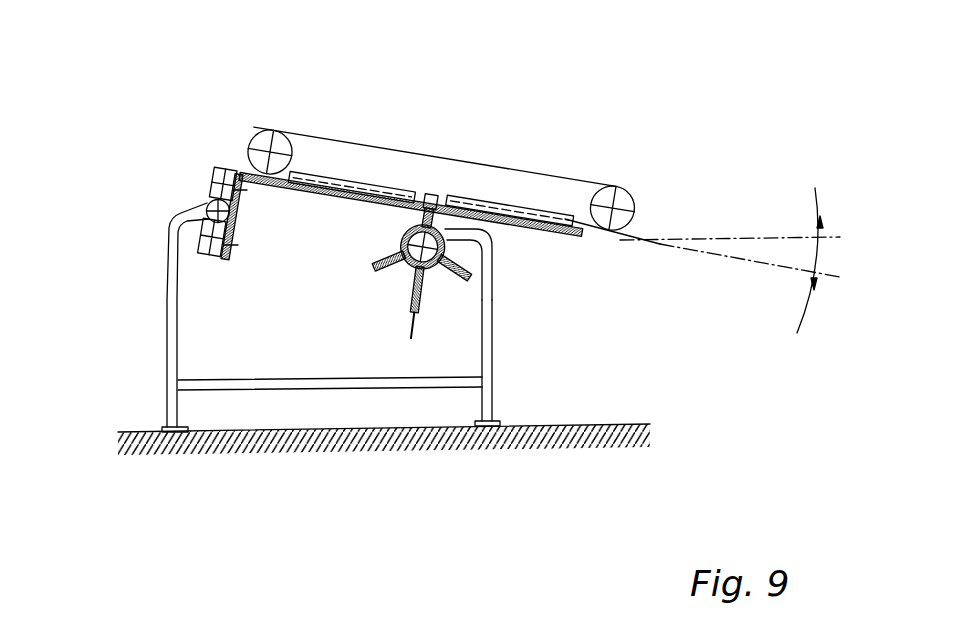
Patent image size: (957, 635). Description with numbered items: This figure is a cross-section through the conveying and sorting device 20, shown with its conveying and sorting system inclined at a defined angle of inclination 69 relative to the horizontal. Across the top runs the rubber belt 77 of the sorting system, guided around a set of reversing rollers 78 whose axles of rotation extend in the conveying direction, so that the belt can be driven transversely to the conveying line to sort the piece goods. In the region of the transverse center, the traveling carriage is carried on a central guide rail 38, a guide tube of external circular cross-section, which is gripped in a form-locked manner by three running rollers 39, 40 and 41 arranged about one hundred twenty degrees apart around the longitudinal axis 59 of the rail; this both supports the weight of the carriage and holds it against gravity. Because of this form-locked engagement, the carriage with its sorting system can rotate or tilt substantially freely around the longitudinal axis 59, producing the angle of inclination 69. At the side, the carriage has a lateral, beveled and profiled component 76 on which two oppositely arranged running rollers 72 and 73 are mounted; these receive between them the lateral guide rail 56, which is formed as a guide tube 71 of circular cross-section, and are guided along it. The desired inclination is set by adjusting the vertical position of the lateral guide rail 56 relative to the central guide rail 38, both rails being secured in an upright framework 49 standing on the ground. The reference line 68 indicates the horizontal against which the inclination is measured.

The device 20 is at (449, 166).
The central guide rail 38 is at (493, 244).
The running roller 39 is at (478, 167).
The running roller 40 is at (375, 268).
The running roller 41 is at (462, 282).
The upright framework 49 is at (172, 330).
The lateral guide rail 56 is at (181, 209).
The longitudinal axis 59 is at (407, 278).
The reference axis 68 is at (717, 239).
The angle of inclination 69 is at (820, 258).
The guide tube 71 is at (206, 203).
The running roller 72 is at (214, 168).
The running roller 73 is at (210, 256).
The lateral profiled component 76 is at (243, 213).
The rubber belt 77 is at (433, 156).
The reversing rollers 78 is at (270, 130).